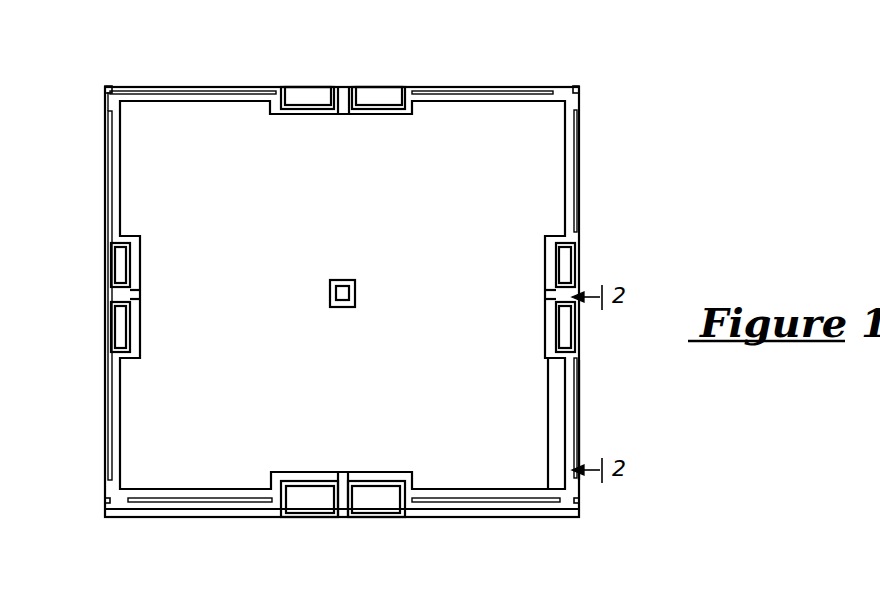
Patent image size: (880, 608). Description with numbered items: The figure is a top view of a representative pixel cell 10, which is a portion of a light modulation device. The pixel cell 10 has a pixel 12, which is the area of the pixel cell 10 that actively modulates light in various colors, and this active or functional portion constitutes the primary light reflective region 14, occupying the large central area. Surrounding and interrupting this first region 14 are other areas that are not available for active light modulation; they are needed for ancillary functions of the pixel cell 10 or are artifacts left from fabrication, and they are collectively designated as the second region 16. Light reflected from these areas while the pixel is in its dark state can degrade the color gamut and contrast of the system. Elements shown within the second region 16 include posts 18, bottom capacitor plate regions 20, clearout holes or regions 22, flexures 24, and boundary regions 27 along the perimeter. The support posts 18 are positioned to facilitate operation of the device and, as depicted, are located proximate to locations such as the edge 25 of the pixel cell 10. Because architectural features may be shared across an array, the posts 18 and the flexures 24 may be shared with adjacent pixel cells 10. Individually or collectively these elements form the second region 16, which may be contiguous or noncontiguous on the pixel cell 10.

The pixel cell 10 is at (628, 80).
The pixel 12 is at (520, 208).
The primary light reflective region 14 is at (242, 95).
The second region 16 is at (178, 82).
The post 18 is at (378, 99).
The bottom capacitor plate region 20 is at (408, 118).
The clearout hole 22 is at (108, 87).
The flexure 24 is at (578, 372).
The edge 25 is at (478, 502).
The boundary region 27 is at (582, 403).